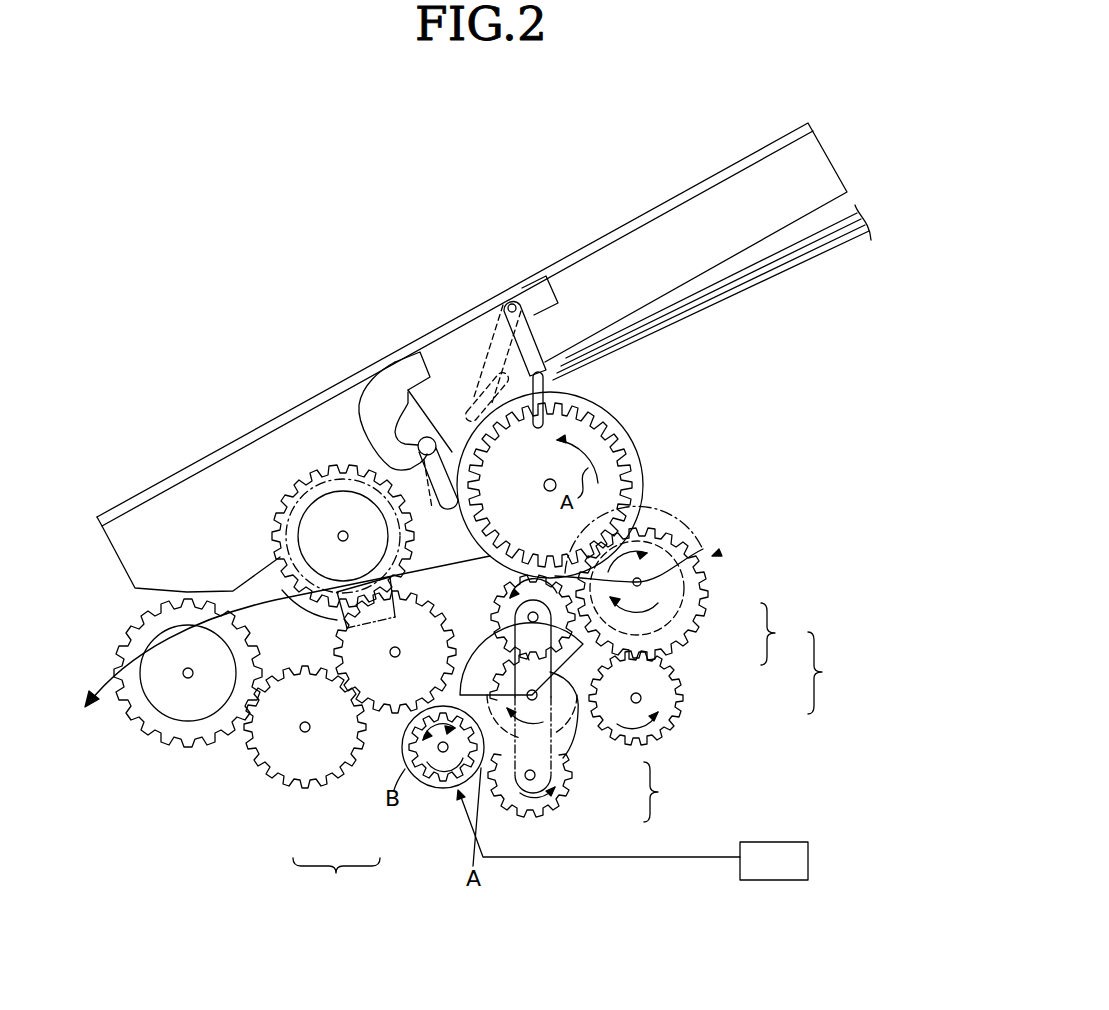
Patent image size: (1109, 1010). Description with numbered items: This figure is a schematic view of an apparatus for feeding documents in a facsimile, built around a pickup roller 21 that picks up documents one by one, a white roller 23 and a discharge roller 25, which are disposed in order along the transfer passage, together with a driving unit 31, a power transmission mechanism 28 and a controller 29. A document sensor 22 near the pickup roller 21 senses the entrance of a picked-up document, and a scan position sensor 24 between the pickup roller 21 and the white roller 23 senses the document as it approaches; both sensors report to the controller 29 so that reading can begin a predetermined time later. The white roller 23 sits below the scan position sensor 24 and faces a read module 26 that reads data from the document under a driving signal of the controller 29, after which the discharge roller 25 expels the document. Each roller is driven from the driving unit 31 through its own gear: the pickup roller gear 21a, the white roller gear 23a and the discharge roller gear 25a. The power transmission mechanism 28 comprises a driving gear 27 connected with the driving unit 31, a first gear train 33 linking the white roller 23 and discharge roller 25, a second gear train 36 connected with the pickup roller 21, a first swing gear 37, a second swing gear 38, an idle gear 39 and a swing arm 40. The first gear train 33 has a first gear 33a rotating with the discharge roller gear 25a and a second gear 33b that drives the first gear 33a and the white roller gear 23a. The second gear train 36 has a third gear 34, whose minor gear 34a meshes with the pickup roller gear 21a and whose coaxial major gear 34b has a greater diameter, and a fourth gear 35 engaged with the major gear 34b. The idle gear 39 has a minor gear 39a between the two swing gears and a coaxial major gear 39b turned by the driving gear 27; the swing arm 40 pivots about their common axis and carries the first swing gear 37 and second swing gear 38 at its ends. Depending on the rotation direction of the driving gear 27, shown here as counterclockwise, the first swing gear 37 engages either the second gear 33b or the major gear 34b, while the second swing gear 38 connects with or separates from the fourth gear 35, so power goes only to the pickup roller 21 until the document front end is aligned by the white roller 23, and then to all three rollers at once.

The pickup roller 21 is at (602, 408).
The pickup roller gear 21a is at (598, 444).
The document sensor 22 is at (525, 343).
The white roller 23 is at (320, 505).
The white roller gear 23a is at (282, 513).
The scan position sensor 24 is at (403, 366).
The discharge roller 25 is at (162, 655).
The discharge roller gear 25a is at (143, 727).
The read module 26 is at (280, 588).
The driving gear 27 is at (408, 775).
The power transmission mechanism 28 is at (716, 557).
The controller 29 is at (776, 842).
The driving unit 31 is at (447, 787).
The first gear train 33 is at (336, 879).
The first gear 33a is at (318, 768).
The second gear 33b is at (388, 698).
The third gear 34 is at (786, 634).
The minor gear 34a is at (652, 568).
The major gear 34b is at (693, 617).
The fourth gear 35 is at (668, 692).
The second gear train 36 is at (831, 673).
The first swing gear 37 is at (497, 597).
The second swing gear 38 is at (550, 810).
The idle gear 39 is at (668, 792).
The minor gear 39a is at (565, 738).
The major gear 39b is at (572, 790).
The swing arm 40 is at (515, 808).